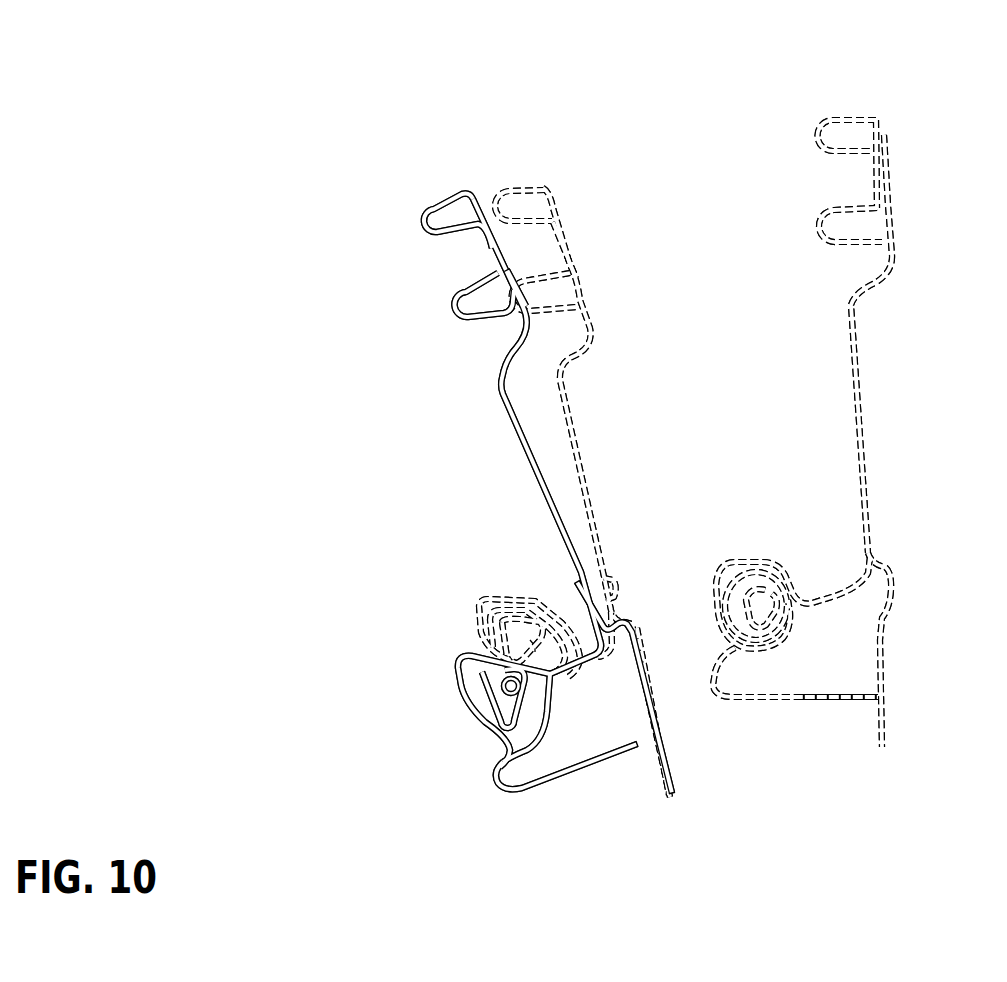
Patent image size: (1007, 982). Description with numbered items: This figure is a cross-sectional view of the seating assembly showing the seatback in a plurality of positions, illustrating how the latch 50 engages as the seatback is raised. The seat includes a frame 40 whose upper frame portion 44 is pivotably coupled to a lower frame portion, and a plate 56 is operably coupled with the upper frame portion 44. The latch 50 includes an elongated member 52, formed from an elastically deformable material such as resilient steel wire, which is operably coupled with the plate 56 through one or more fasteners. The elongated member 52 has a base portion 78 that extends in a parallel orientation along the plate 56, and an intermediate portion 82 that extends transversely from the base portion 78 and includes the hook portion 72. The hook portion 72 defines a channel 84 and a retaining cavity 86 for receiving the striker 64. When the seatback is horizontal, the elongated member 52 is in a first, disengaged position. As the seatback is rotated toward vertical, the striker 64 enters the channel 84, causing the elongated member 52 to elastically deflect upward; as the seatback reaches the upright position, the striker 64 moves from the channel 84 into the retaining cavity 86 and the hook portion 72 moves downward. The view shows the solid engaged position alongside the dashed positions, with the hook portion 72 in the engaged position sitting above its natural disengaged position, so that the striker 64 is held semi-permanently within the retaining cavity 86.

The frame 40 is at (637, 176).
The upper frame portion 44 is at (427, 212).
The plate 56 is at (527, 447).
The base portion 78 is at (598, 590).
The intermediate portion 82 is at (482, 594).
The retaining cavity 86 is at (543, 612).
The hook portion 72 is at (514, 620).
The striker 64 is at (510, 687).
The channel 84 is at (497, 740).
The latch 50 is at (662, 450).
The elongated member 52 is at (563, 778).